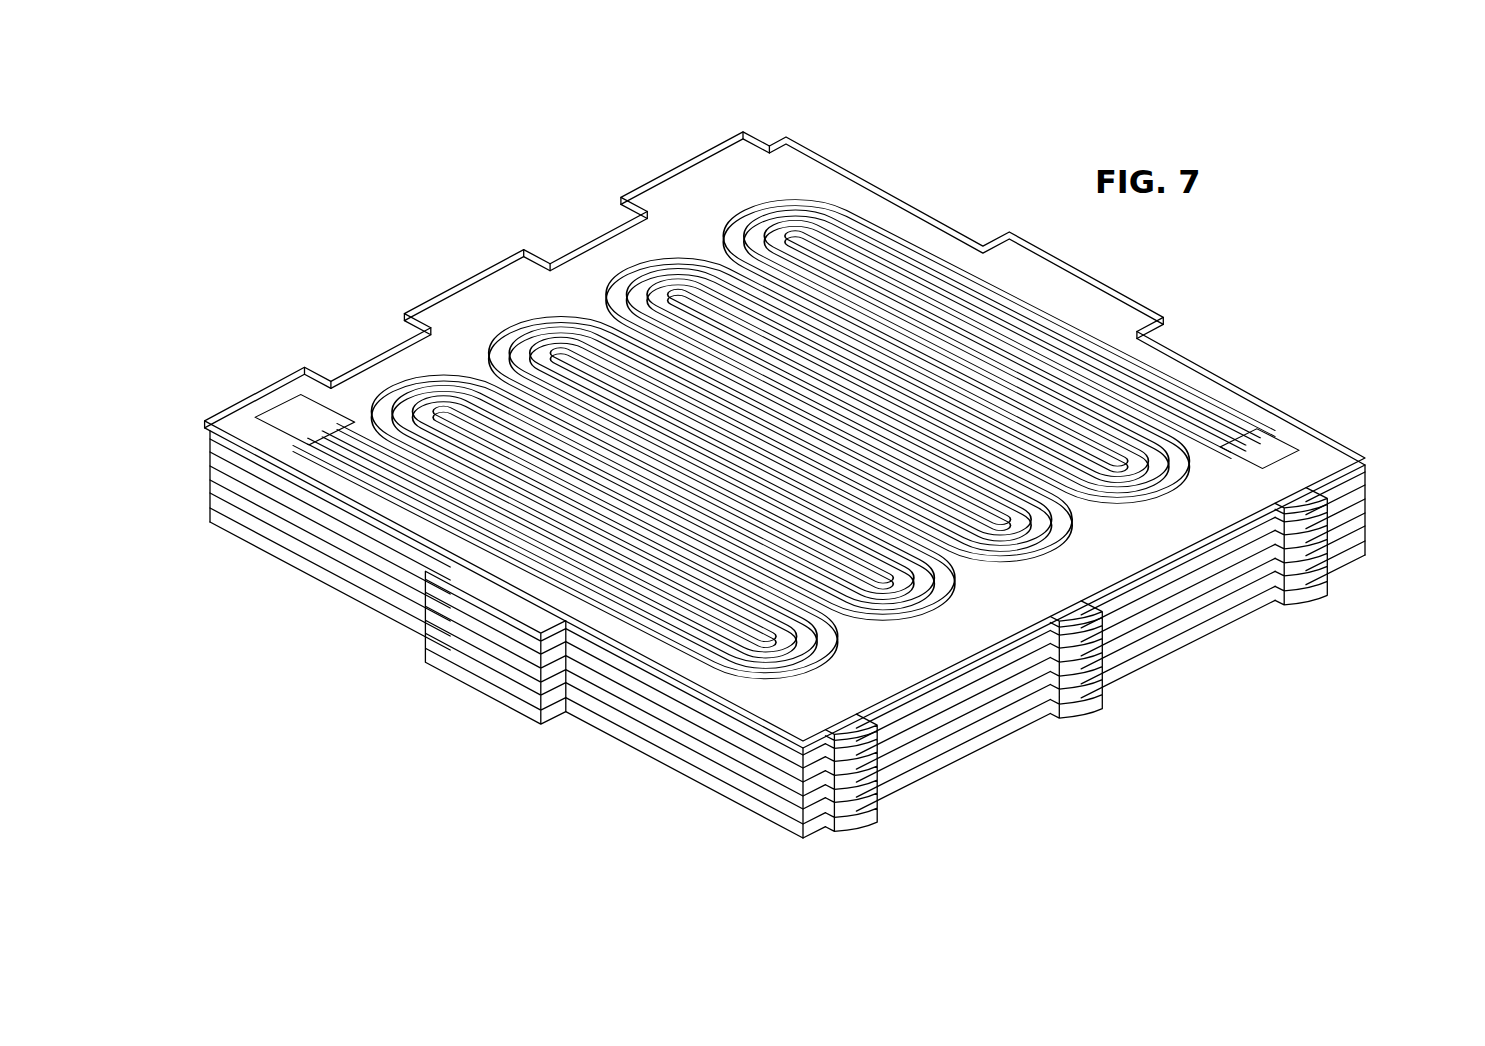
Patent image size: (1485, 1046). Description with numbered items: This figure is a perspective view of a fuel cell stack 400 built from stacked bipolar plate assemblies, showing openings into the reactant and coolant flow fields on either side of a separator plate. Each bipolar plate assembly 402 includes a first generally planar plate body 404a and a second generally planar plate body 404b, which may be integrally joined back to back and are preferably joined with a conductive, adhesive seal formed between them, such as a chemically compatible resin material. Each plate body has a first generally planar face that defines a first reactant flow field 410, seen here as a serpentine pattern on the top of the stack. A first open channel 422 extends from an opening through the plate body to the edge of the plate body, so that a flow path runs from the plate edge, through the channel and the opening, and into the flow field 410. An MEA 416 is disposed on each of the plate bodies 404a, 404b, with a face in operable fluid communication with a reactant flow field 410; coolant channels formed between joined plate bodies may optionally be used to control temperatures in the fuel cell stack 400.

The fuel cell stack 400 is at (507, 762).
The bipolar plate assembly 402 is at (190, 417).
The first generally planar plate body 404a is at (1348, 463).
The second generally planar plate body 404b is at (1348, 486).
The first reactant flow field 410 is at (772, 232).
The MEA 416 is at (793, 166).
The first open channel 422 is at (1312, 548).